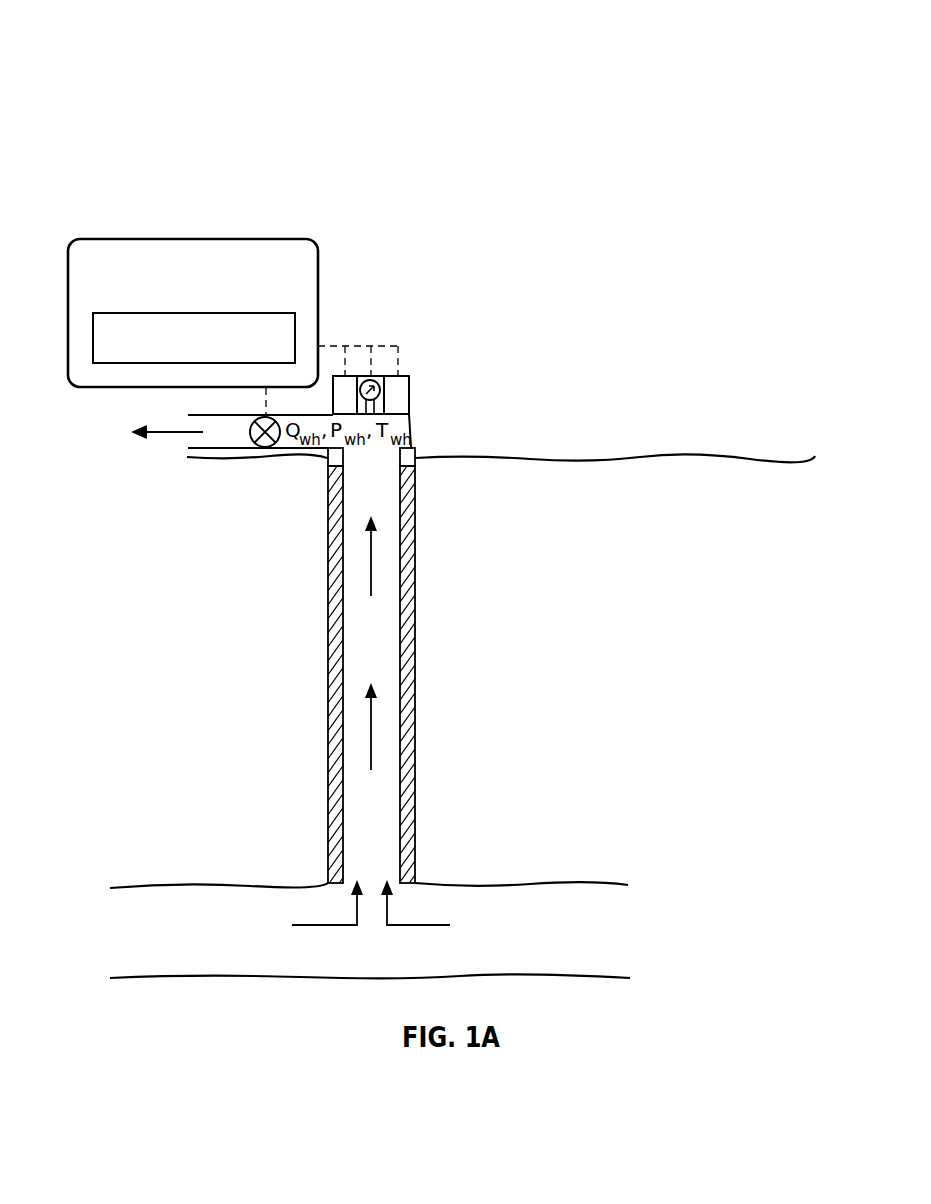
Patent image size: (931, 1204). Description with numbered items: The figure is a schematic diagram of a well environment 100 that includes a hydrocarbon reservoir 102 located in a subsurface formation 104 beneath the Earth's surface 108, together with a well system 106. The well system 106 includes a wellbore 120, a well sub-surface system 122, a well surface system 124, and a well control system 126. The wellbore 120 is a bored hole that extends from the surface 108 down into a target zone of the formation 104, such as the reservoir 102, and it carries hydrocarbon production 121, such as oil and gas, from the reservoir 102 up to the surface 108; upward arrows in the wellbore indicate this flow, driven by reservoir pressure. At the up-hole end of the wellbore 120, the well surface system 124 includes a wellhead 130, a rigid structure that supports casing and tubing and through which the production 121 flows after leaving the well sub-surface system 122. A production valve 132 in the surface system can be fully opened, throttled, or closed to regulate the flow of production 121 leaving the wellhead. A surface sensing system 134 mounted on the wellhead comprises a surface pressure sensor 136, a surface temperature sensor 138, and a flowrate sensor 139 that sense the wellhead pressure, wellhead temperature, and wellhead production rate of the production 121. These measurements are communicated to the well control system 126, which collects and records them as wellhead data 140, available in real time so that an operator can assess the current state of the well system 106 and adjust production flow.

The well environment 100 is at (223, 36).
The hydrocarbon reservoir 102 is at (582, 942).
The subsurface formation 104 is at (639, 691).
The well system 106 is at (150, 182).
The surface 108 is at (598, 470).
The wellbore 120 is at (426, 648).
The production 121 is at (163, 436).
The well sub-surface system 122 is at (266, 622).
The well surface system 124 is at (555, 158).
The well control system 126 is at (120, 240).
The wellhead 130 is at (424, 445).
The production valve 132 is at (268, 452).
The surface sensing system 134 is at (420, 397).
The surface pressure sensor 136 is at (372, 378).
The surface temperature sensor 138 is at (404, 376).
The flowrate sensor 139 is at (338, 376).
The wellhead data 140 is at (108, 364).